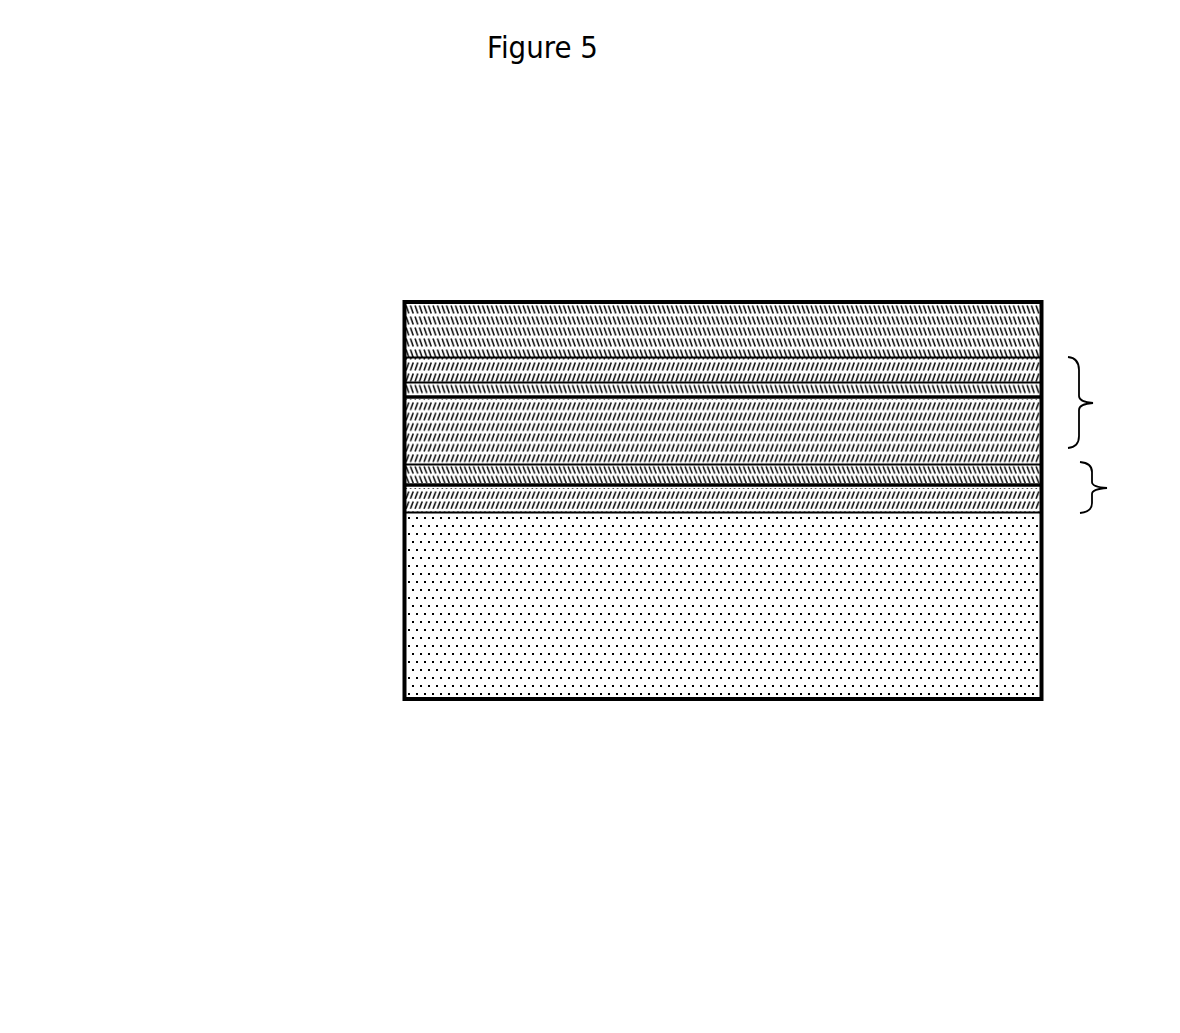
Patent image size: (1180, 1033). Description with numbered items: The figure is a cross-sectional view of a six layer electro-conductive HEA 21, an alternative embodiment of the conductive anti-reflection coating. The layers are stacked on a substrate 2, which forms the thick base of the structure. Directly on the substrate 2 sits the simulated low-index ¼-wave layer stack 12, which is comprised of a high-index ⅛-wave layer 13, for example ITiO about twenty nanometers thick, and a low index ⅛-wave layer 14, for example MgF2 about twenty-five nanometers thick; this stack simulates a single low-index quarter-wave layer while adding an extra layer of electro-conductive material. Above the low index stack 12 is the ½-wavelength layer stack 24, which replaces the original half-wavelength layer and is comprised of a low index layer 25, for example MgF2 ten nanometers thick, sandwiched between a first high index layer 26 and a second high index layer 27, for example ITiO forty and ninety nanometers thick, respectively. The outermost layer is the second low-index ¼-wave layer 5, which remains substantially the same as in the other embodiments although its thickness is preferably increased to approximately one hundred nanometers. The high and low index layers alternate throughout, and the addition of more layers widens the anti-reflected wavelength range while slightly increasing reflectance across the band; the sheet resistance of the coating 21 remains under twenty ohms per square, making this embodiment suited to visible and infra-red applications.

The six layer electro-conductive HEA 21 is at (746, 217).
The second low-index ¼-wave layer 5 is at (1043, 315).
The first high index layer 26 is at (410, 367).
The low index layer 25 is at (405, 390).
The second high index layer 27 is at (405, 438).
The low index ⅛-wave layer 14 is at (403, 477).
The high-index ⅛-wave layer 13 is at (403, 502).
The substrate 2 is at (782, 645).
The ½-wavelength layer stack 24 is at (1110, 402).
The simulated low-index ¼-wave layer stack 12 is at (1116, 487).